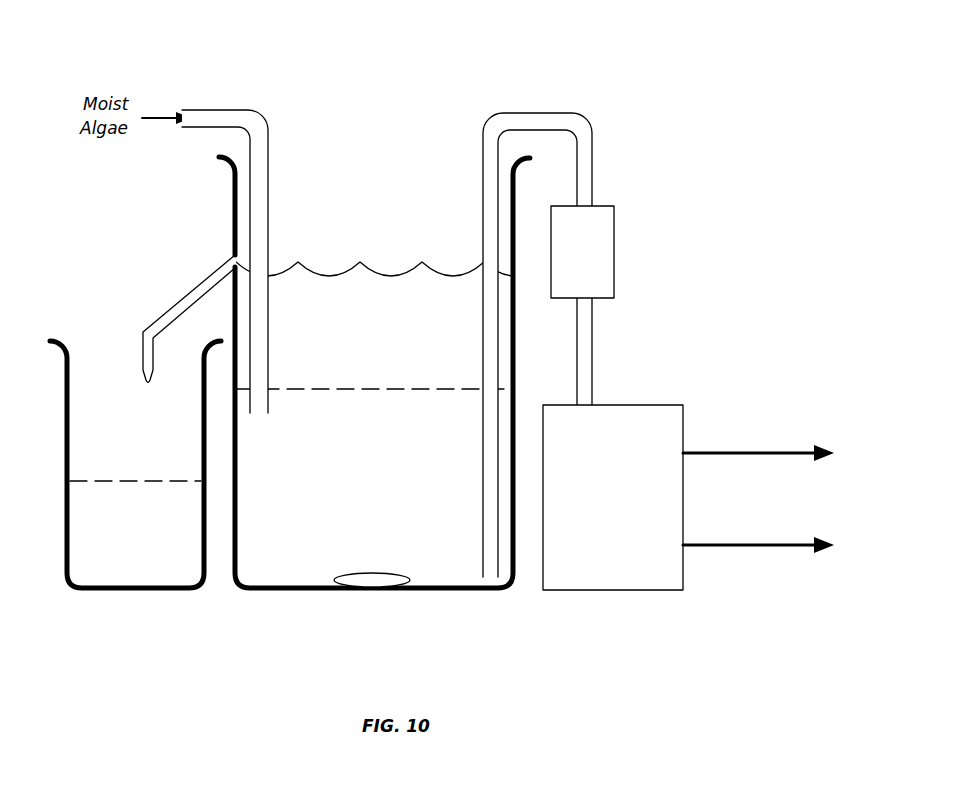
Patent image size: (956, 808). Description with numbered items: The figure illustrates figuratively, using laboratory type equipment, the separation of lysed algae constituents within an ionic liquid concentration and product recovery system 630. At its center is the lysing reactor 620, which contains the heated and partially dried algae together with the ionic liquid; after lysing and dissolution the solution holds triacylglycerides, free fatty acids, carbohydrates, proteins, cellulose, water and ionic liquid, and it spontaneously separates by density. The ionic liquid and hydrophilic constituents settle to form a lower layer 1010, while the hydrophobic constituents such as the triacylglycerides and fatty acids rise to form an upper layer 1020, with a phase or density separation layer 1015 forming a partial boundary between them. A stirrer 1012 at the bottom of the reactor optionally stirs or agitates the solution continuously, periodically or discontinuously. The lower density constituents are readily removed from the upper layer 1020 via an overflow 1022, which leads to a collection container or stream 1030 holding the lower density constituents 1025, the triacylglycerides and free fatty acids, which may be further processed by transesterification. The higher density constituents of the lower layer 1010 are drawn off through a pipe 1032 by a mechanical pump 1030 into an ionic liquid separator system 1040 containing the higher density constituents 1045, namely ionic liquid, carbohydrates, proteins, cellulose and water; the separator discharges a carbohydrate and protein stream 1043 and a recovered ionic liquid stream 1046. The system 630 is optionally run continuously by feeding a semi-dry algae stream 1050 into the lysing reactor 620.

The ionic liquid concentration and product recovery system 630 is at (136, 38).
The lysing reactor 620 is at (500, 592).
The lower layer 1010 is at (461, 422).
The stirrer 1012 is at (392, 572).
The separation layer 1015 is at (296, 392).
The upper layer 1020 is at (461, 380).
The overflow 1022 is at (192, 290).
The lower density constituents 1025 is at (182, 574).
The collection container or stream 1030 is at (607, 206).
The ionic liquid outlet pipe 1032 is at (560, 113).
The ionic liquid separator system 1040 is at (668, 405).
The carbohydrates and proteins outlet 1043 is at (708, 452).
The higher density constituents 1045 is at (667, 580).
The ionic liquid outlet 1046 is at (708, 544).
The semi-dry algae stream 1050 is at (242, 110).